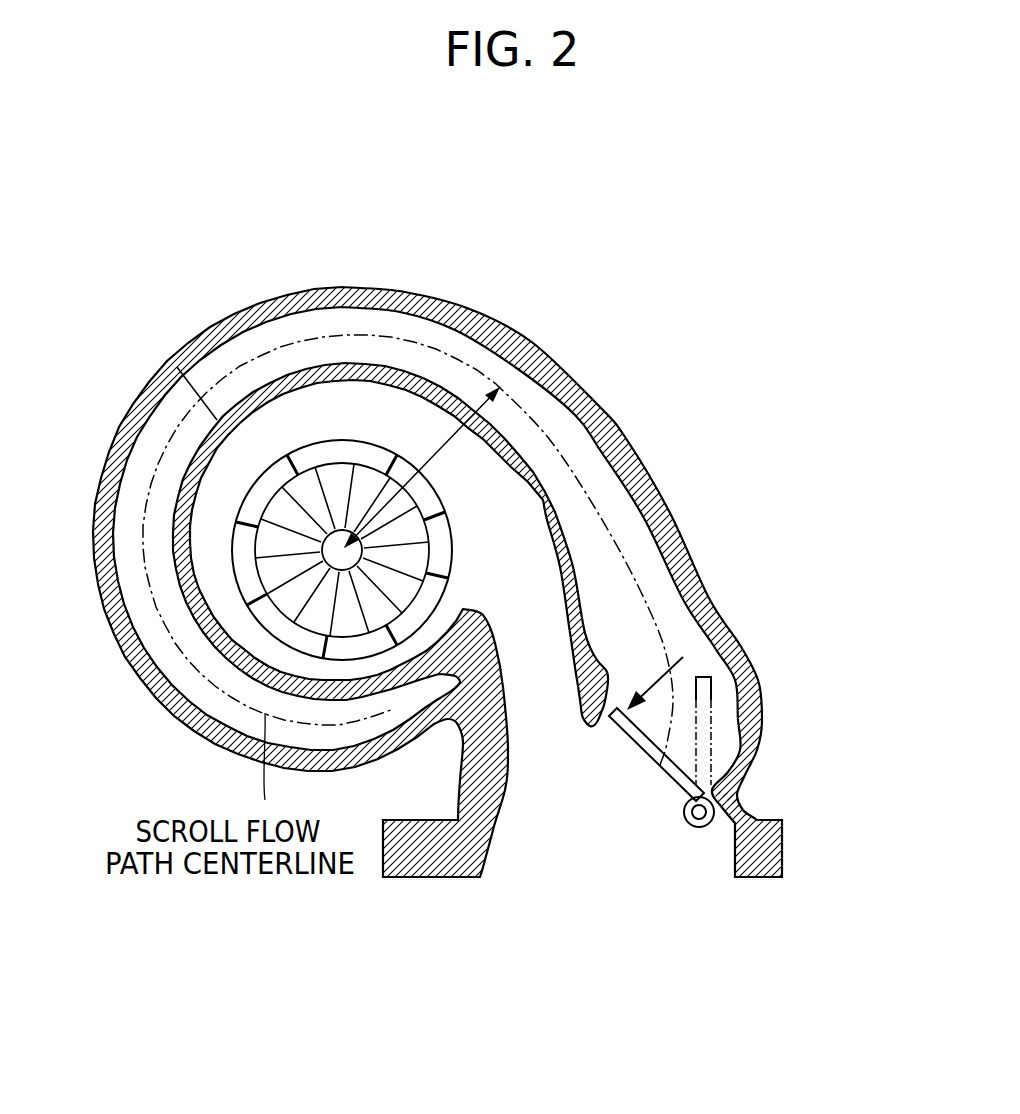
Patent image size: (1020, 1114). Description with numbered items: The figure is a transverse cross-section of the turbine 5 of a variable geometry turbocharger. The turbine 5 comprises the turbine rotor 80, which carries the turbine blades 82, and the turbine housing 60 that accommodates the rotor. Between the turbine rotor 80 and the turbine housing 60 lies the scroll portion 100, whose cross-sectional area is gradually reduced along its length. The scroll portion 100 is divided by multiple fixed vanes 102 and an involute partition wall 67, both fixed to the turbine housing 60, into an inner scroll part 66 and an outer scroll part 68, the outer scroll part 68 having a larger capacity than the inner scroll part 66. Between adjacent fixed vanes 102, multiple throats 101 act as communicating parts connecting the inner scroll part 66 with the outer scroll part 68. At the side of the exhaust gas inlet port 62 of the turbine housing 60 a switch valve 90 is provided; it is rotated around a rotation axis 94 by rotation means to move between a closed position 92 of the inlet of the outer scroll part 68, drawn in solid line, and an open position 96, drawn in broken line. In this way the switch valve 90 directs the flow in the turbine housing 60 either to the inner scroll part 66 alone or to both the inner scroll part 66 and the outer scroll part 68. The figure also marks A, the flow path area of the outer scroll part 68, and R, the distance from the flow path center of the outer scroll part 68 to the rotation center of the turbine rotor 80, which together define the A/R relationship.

The turbine 5 is at (790, 400).
The turbine housing 60 is at (527, 338).
The exhaust gas inlet port 62 is at (782, 847).
The inner scroll part 66 is at (360, 400).
The involute partition wall 67 is at (585, 612).
The outer scroll part 68 is at (465, 348).
The turbine rotor 80 is at (367, 532).
The turbine blades 82 is at (247, 518).
The switch valve 90 is at (665, 668).
The closed position 92 is at (647, 763).
The rotation axis 94 is at (693, 828).
The open position 96 is at (712, 692).
The scroll portion 100 is at (542, 825).
The throats 101 is at (297, 373).
The fixed vanes 102 is at (330, 367).
The distance from flow path center to rotation center R is at (422, 467).
The flow path area of outer scroll part A is at (190, 382).